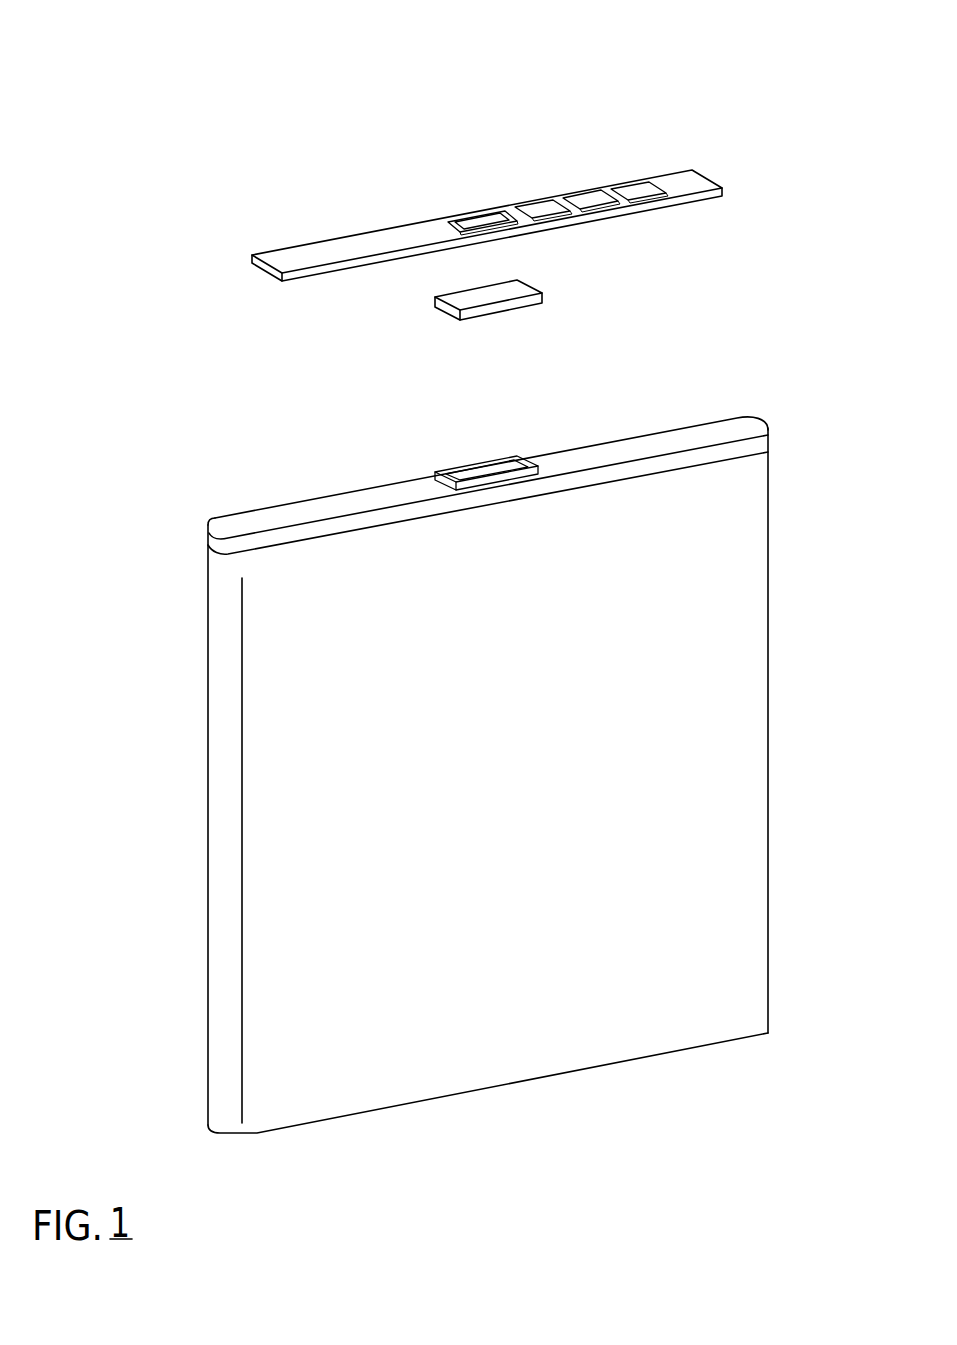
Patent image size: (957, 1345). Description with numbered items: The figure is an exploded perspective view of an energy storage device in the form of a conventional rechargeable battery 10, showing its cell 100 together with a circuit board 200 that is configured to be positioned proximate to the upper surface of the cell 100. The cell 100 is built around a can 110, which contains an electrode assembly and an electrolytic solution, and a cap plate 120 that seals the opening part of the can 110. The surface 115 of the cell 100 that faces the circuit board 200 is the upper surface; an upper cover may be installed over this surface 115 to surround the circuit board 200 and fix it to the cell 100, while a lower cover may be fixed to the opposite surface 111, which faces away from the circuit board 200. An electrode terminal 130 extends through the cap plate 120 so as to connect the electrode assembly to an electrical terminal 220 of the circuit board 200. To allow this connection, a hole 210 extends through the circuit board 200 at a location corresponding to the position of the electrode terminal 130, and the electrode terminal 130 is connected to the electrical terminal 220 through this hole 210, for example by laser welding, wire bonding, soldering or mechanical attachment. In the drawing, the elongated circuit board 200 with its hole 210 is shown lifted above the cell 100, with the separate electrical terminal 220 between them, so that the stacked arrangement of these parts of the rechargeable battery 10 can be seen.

The rechargeable battery 10 is at (140, 54).
The cell 100 is at (190, 835).
The can 110 is at (227, 703).
The surface of the cell 111 is at (547, 1078).
The surface of the cell 115 is at (311, 510).
The cap plate 120 is at (208, 534).
The electrode terminal 130 is at (483, 470).
The circuit board 200 is at (665, 182).
The hole 210 is at (480, 217).
The electrical terminal 220 is at (527, 283).